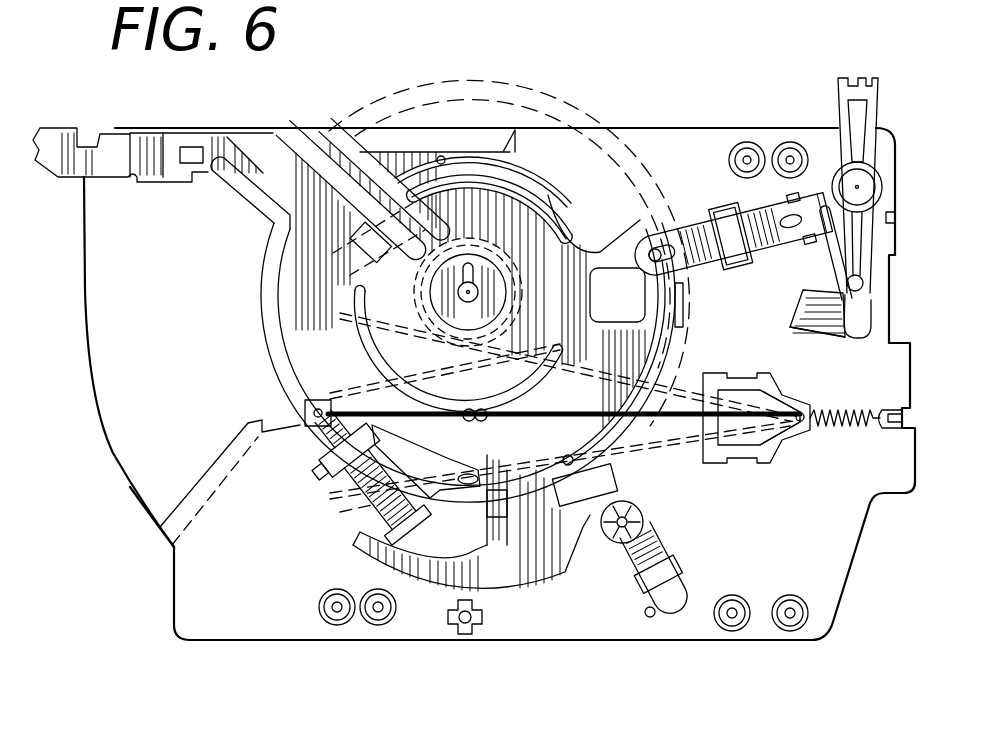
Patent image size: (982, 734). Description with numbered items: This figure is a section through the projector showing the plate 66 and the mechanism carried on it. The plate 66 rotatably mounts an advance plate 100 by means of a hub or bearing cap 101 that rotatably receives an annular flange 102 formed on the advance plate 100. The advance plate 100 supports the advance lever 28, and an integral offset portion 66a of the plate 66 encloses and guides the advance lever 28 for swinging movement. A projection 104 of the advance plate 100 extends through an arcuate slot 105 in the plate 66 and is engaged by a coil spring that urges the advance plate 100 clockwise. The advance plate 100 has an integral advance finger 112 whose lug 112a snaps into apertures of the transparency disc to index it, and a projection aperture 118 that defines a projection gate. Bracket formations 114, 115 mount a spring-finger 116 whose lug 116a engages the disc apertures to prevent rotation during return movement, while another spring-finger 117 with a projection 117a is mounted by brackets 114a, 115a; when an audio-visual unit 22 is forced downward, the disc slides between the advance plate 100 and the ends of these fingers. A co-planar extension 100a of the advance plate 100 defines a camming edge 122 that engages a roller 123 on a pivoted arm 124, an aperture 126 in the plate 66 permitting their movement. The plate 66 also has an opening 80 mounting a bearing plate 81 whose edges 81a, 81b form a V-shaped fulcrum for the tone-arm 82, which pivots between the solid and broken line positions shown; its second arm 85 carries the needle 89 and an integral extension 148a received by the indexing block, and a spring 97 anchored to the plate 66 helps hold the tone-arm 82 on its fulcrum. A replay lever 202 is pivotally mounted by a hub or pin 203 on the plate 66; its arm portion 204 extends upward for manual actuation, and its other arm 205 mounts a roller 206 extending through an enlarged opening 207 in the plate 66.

The audio-visual unit 22 is at (548, 96).
The advance lever 28 is at (87, 147).
The plate 66 is at (188, 356).
The offset portion 66a is at (157, 472).
The opening 80 is at (770, 392).
The bearing plate 81 is at (712, 380).
The edge 81a is at (773, 402).
The edge 81b is at (772, 437).
The tone-arm 82 is at (664, 428).
The second arm 85 is at (672, 410).
The needle 89 is at (483, 407).
The spring 97 is at (848, 430).
The advance plate 100 is at (312, 320).
The co-planar extension 100a is at (542, 578).
The hub or bearing cap 101 is at (488, 328).
The annular flange 102 is at (490, 310).
The projection 104 is at (528, 170).
The arcuate slot 105 is at (440, 156).
The advance finger 112 is at (420, 475).
The lug 112a is at (478, 470).
The bracket formation 114 is at (322, 456).
The bracket formation 114a is at (720, 212).
The bracket formation 115 is at (392, 538).
The bracket formation 115a is at (810, 250).
The spring-finger 116 is at (372, 487).
The lug 116a is at (305, 406).
The spring-finger 117 is at (760, 215).
The projection 117a is at (651, 235).
The projection aperture 118 is at (617, 295).
The camming edge 122 is at (603, 550).
The roller 123 is at (646, 512).
The arm 124 is at (803, 297).
The aperture 126 is at (655, 616).
The extension 148a is at (383, 385).
The replay lever 202 is at (832, 89).
The hub or pin 203 is at (862, 190).
The arm portion 204 is at (838, 118).
The arm 205 is at (866, 274).
The roller 206 is at (870, 318).
The enlarged opening 207 is at (812, 326).